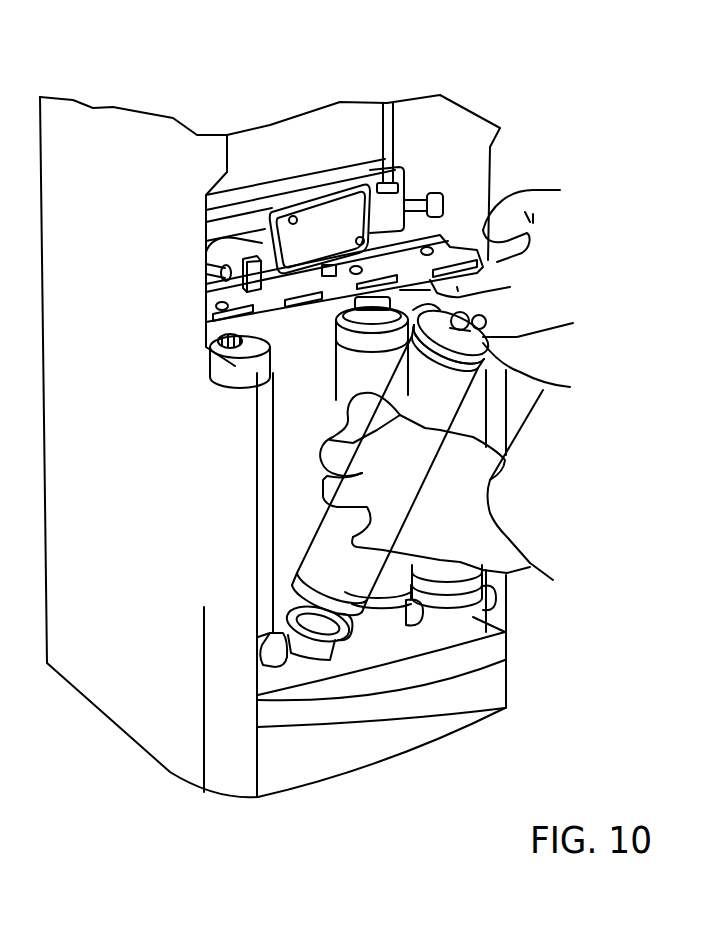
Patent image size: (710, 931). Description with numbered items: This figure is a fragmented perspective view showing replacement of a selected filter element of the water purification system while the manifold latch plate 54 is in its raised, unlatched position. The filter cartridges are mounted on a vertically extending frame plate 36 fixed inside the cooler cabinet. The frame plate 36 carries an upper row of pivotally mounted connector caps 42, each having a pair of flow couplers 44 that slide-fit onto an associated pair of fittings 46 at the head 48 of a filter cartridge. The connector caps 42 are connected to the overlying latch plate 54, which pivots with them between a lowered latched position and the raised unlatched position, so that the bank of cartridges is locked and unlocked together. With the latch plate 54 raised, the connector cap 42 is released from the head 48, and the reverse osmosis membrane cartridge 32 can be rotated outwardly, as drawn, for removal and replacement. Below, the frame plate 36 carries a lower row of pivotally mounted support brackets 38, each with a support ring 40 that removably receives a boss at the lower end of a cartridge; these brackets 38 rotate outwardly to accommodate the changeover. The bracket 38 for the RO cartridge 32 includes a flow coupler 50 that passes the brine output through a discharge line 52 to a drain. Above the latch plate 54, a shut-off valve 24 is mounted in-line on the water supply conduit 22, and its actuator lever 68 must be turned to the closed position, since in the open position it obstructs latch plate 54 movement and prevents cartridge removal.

The water supply conduit 22 is at (206, 197).
The shut-off valve 24 is at (317, 203).
The actuator lever 68 is at (260, 257).
The flow couplers 44 is at (323, 313).
The latch plate 54 is at (203, 332).
The connector caps 42 is at (222, 346).
The frame plate 36 is at (297, 422).
The reverse osmosis membrane cartridge 32 is at (453, 393).
The fittings 46 is at (476, 340).
The head 48 is at (495, 345).
The support ring 40 is at (303, 613).
The flow coupler 50 is at (325, 642).
The support brackets 38 is at (280, 655).
The discharge line 52 is at (276, 655).